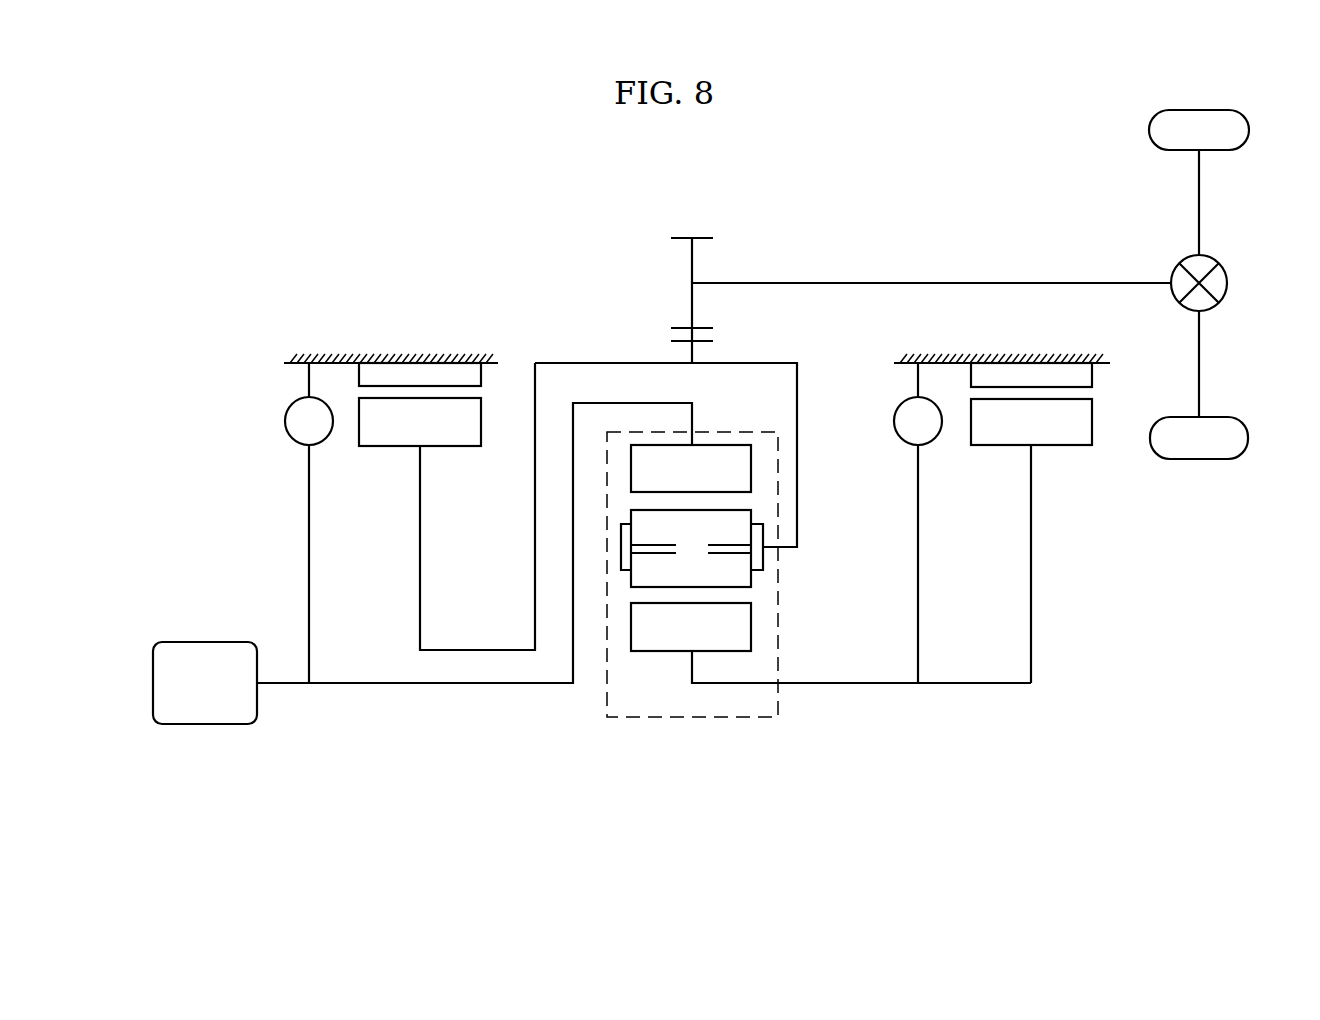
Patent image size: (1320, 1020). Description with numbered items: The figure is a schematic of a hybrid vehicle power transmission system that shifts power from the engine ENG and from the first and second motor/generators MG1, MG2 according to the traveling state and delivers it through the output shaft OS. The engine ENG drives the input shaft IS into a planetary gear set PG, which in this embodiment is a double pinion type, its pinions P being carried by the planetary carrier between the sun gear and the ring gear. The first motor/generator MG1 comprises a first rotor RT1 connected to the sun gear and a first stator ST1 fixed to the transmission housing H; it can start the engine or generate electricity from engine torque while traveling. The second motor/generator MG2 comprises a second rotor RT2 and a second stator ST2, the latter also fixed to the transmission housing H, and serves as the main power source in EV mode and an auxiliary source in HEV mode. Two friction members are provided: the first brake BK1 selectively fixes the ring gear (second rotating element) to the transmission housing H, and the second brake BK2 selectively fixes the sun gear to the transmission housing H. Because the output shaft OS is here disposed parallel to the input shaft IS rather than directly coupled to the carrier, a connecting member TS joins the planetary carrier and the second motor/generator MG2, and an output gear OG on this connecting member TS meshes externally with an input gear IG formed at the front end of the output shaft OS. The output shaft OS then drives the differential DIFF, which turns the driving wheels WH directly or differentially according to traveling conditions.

The engine ENG is at (205, 683).
The input shaft IS is at (498, 684).
The first brake BK1 is at (309, 523).
The second brake BK2 is at (918, 523).
The transmission housing H is at (351, 362).
The first motor/generator MG1 is at (1052, 523).
The second motor/generator MG2 is at (447, 448).
The first stator ST1 is at (1080, 375).
The first rotor RT1 is at (1057, 410).
The second stator ST2 is at (411, 373).
The second rotor RT2 is at (458, 428).
The connecting member TS is at (767, 362).
The input gear IG is at (690, 298).
The output gear OG is at (678, 341).
The output shaft OS is at (930, 282).
The differential DIFF is at (1172, 275).
The driving wheels WH is at (1152, 128).
The planetary gear set PG is at (819, 615).
The pinion P is at (691, 548).